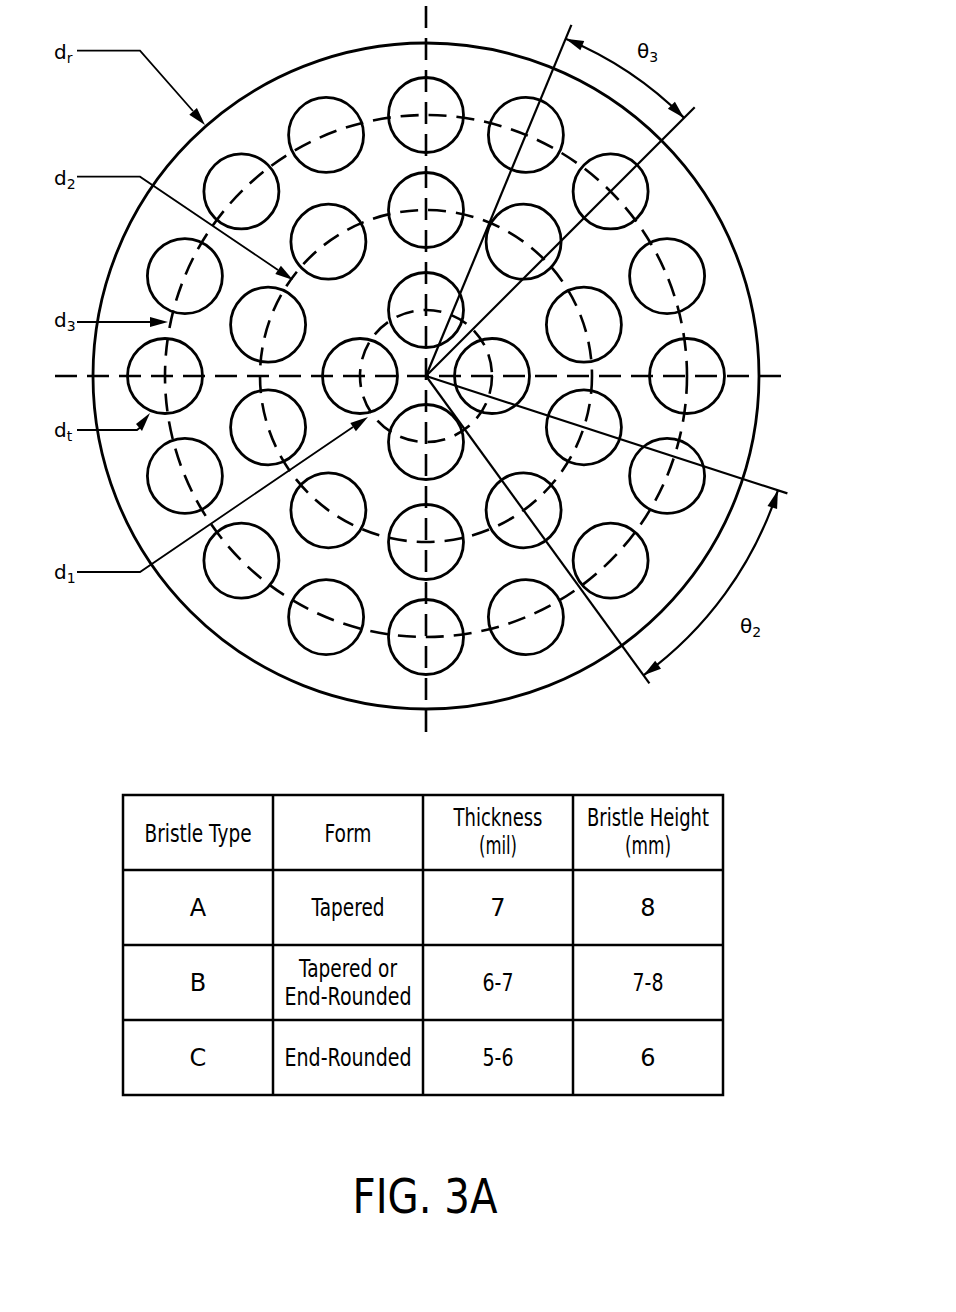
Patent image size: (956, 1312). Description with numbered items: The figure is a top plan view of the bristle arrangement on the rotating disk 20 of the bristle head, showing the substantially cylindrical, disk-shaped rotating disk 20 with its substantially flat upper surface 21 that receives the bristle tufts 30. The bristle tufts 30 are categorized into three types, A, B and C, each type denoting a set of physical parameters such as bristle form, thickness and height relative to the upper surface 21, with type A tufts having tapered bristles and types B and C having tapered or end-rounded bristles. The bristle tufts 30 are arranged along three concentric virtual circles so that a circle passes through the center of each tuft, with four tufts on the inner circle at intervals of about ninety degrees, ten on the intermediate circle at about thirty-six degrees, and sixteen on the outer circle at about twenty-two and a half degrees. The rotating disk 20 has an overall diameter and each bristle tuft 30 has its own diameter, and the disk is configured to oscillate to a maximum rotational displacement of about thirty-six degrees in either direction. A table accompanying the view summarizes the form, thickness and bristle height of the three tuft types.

The rotating disk 20 is at (728, 220).
The upper surface 21 is at (724, 289).
The bristle tufts 30 is at (719, 356).